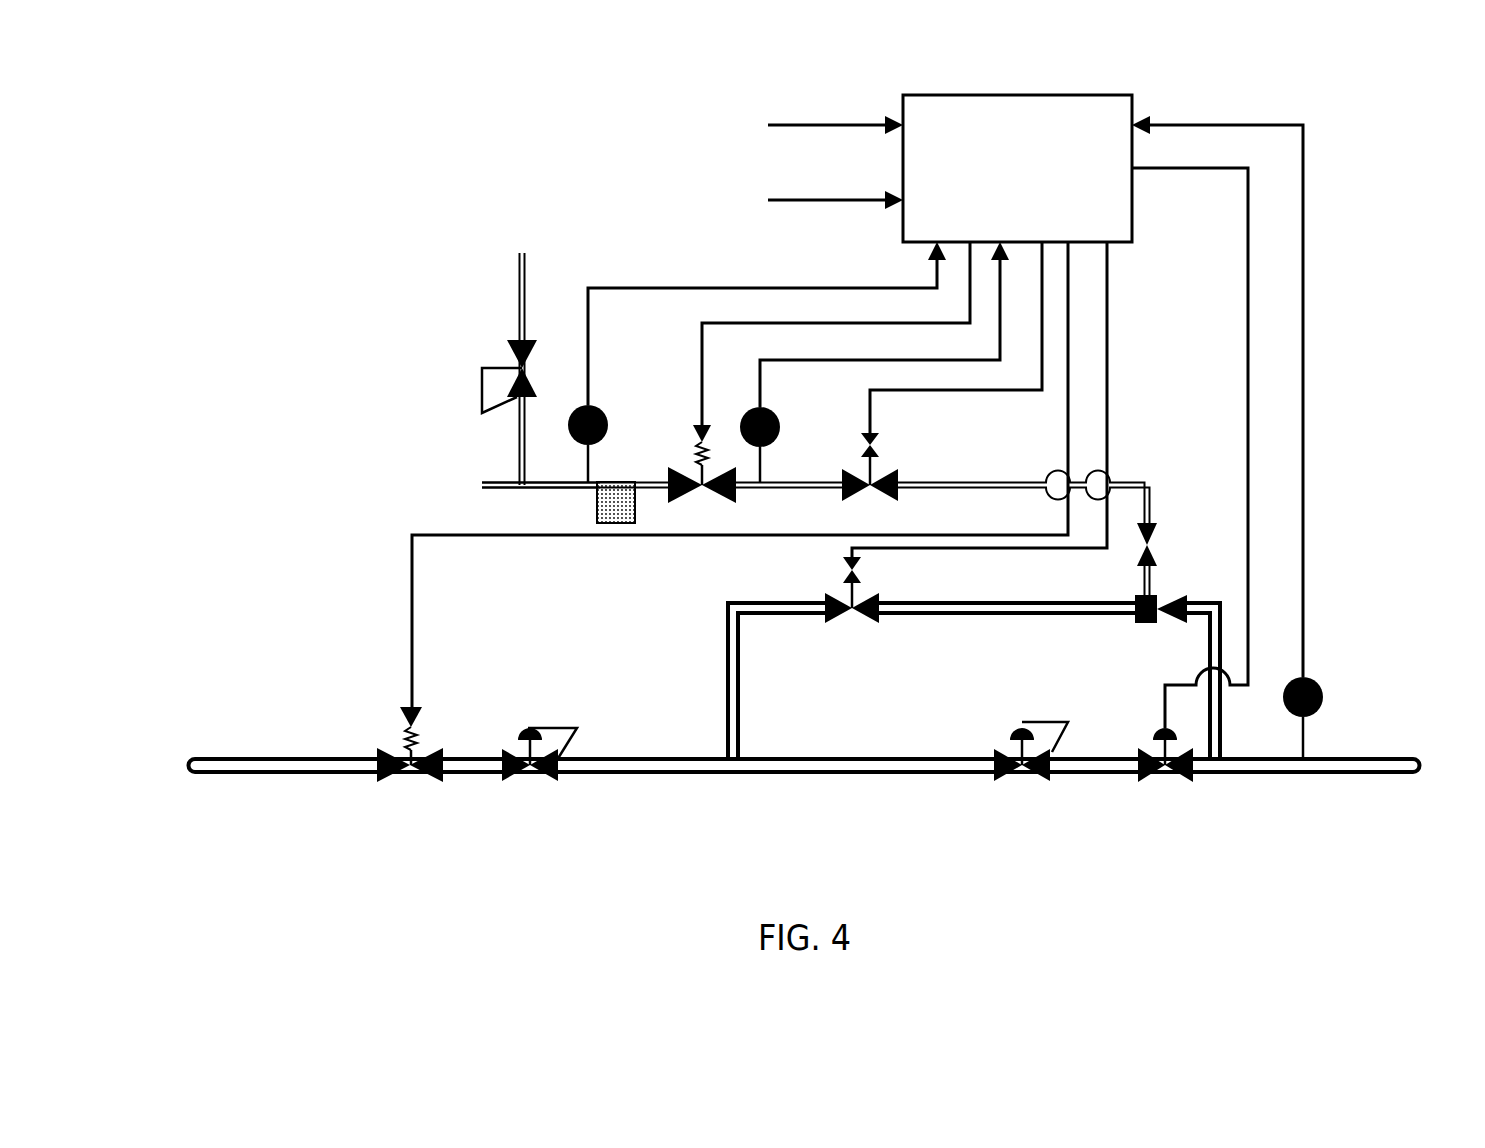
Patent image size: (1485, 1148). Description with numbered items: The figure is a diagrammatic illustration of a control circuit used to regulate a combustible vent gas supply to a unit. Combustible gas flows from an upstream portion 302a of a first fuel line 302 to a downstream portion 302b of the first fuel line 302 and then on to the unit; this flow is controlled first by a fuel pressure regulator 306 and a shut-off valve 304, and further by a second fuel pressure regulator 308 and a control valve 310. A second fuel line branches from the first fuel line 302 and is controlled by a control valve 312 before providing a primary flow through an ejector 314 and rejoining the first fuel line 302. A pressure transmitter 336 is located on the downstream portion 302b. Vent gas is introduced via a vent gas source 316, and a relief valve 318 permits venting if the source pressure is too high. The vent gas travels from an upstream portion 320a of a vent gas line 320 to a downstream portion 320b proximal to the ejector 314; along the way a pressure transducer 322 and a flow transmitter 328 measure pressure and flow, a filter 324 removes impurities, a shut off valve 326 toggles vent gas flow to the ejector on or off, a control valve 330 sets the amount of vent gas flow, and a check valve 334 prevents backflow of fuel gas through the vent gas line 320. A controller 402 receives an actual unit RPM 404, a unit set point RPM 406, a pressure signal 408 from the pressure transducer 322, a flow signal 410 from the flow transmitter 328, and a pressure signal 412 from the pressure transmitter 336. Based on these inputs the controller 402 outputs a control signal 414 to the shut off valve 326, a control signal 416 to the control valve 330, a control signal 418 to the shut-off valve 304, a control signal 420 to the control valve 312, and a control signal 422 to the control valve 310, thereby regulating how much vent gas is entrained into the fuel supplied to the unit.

The first fuel line 302 is at (652, 794).
The upstream portion of the first fuel line 302a is at (205, 752).
The downstream portion of the first fuel line 302b is at (1390, 748).
The shut-off valve 304 is at (393, 725).
The fuel pressure regulator 306 is at (522, 723).
The fuel pressure regulator 308 is at (1013, 712).
The control valve 310 is at (1145, 723).
The control valve 312 is at (843, 563).
The ejector 314 is at (1158, 597).
The vent gas source 316 is at (487, 473).
The relief valve 318 is at (533, 358).
The vent gas line 320 is at (973, 495).
The upstream portion of the vent gas line 320a is at (507, 490).
The downstream portion of the vent gas line 320b is at (1135, 588).
The pressure transducer 322 is at (593, 397).
The filter 324 is at (607, 482).
The shut off valve 326 is at (685, 468).
The flow transmitter 328 is at (767, 405).
The control valve 330 is at (880, 448).
The check valve 334 is at (1153, 547).
The pressure transmitter 336 is at (1320, 670).
The controller 402 is at (1012, 87).
The actual unit RPM 404 is at (775, 115).
The unit set point RPM 406 is at (783, 197).
The pressure signal 408 is at (777, 285).
The flow signal 410 is at (852, 365).
The pressure signal 412 is at (1255, 122).
The control signal 414 is at (688, 348).
The control signal 416 is at (995, 397).
The control signal 418 is at (540, 538).
The control signal 420 is at (953, 548).
The control signal 422 is at (1245, 305).